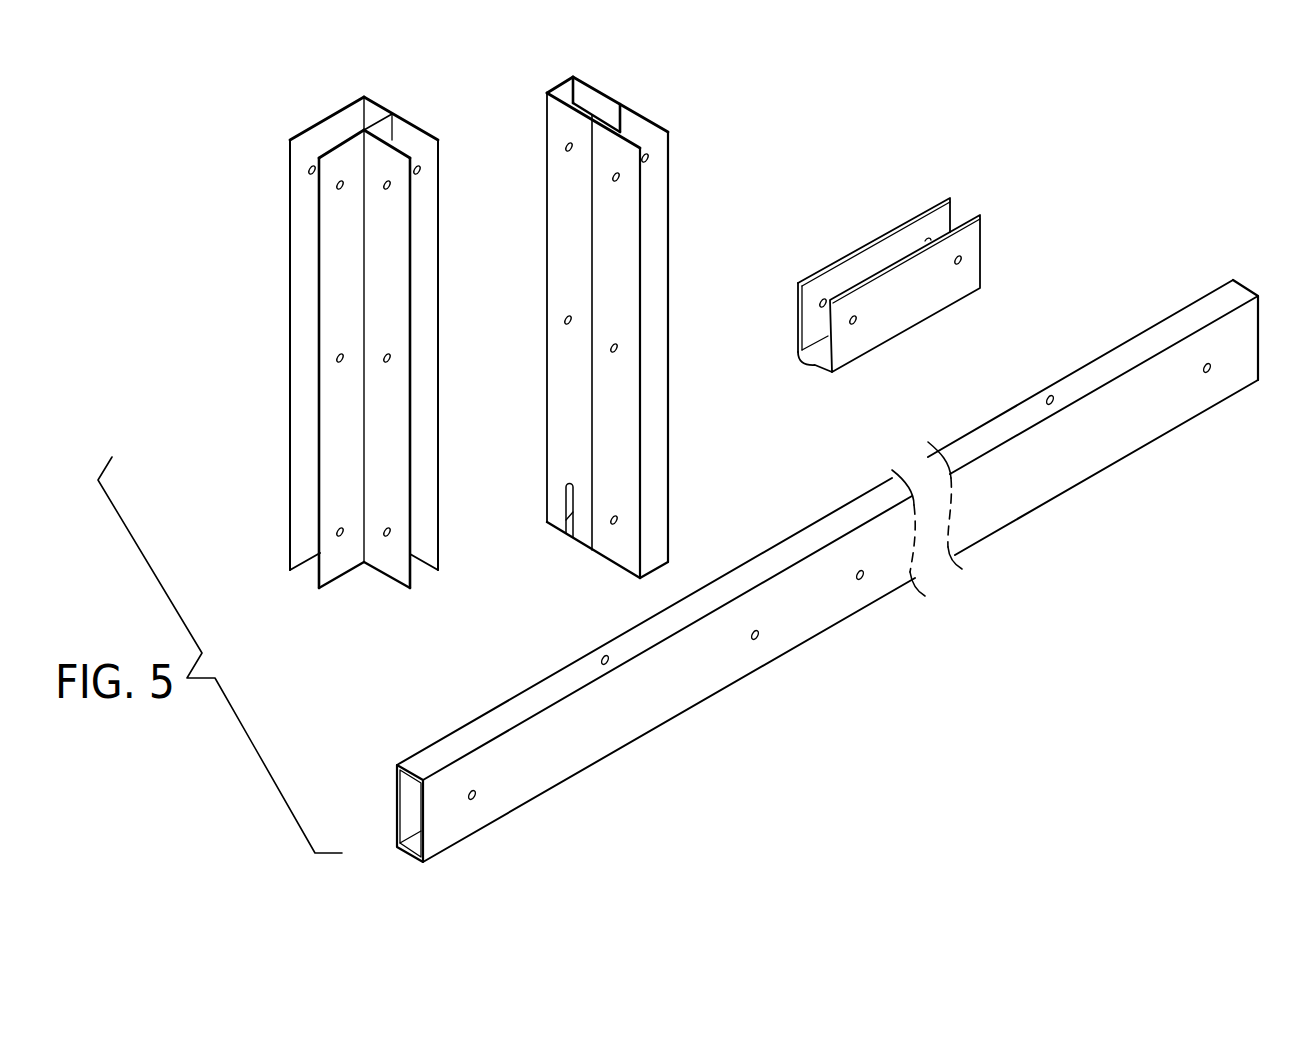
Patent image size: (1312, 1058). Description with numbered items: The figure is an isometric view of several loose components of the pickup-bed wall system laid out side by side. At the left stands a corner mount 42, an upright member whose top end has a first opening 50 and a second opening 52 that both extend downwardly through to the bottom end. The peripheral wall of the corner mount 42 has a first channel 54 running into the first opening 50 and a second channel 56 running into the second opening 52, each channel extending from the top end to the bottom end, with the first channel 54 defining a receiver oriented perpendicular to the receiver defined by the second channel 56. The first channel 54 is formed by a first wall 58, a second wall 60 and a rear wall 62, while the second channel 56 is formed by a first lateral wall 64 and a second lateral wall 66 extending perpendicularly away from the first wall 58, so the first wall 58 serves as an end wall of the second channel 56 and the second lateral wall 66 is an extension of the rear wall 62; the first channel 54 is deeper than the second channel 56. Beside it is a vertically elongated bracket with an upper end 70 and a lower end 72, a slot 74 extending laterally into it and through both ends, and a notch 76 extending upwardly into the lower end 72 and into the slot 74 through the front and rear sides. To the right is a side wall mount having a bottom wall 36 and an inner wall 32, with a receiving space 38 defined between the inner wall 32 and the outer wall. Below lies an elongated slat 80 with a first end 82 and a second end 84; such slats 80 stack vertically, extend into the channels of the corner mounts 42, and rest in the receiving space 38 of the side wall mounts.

The inner wall 32 is at (968, 243).
The bottom wall 36 is at (803, 363).
The receiving space 38 is at (887, 252).
The corner mount 42 is at (241, 256).
The first opening 50 is at (331, 138).
The second opening 52 is at (408, 137).
The first channel 54 is at (305, 337).
The second channel 56 is at (423, 375).
The first wall 58 is at (310, 557).
The second wall 60 is at (302, 473).
The rear wall 62 is at (374, 112).
The first lateral wall 64 is at (393, 502).
The second lateral wall 66 is at (423, 273).
The upper end 70 is at (647, 118).
The lower end 72 is at (615, 566).
The slot 74 is at (650, 262).
The notch 76 is at (562, 526).
The slat 80 is at (618, 85).
The first end 82 is at (423, 817).
The second end 84 is at (1258, 332).